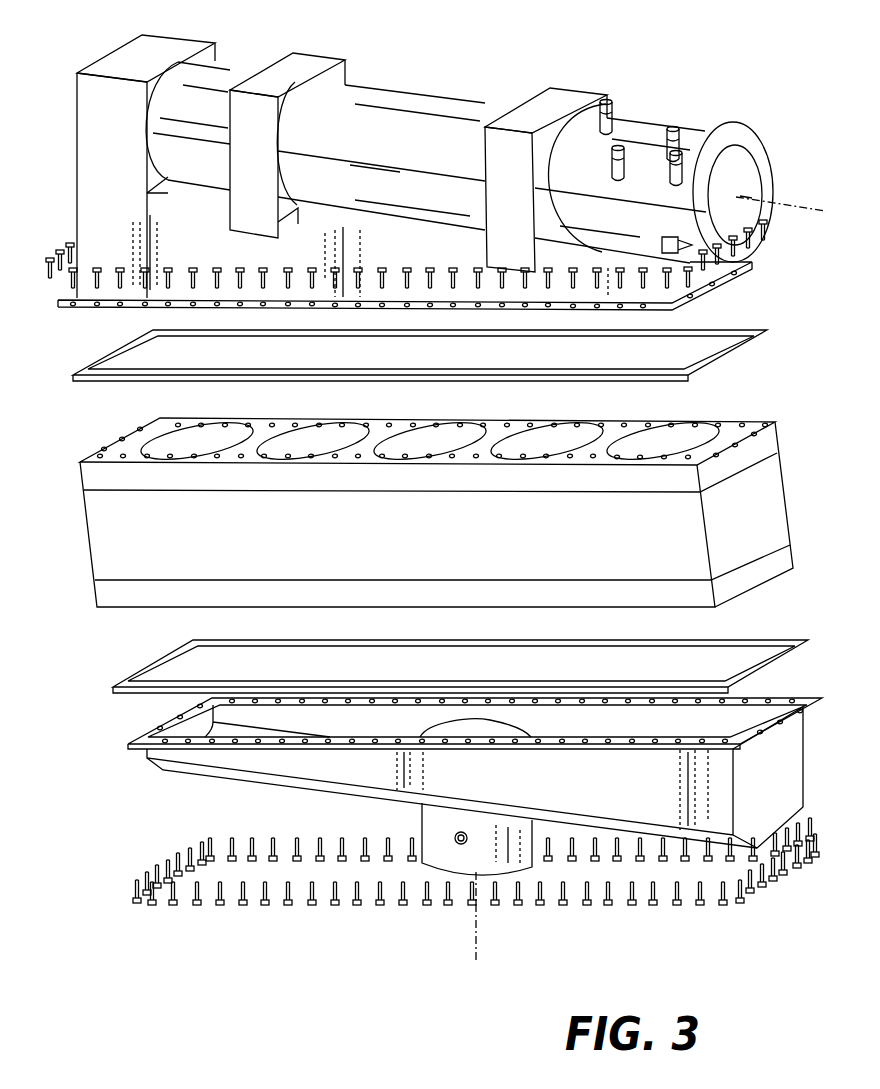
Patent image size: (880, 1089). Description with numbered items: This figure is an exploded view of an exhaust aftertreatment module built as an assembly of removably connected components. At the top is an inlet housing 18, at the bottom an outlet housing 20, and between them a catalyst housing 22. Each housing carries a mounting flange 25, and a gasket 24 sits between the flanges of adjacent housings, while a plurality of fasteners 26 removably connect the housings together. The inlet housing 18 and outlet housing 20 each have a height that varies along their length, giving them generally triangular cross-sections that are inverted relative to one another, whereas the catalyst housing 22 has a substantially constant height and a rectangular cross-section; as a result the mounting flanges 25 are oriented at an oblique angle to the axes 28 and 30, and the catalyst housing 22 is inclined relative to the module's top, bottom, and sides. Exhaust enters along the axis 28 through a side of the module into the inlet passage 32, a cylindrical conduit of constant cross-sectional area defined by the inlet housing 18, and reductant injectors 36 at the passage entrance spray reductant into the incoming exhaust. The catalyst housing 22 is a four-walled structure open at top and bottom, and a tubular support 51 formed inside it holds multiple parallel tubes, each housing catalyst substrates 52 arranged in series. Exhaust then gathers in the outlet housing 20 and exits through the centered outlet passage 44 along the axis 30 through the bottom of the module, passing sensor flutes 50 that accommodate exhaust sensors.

The inlet housing 18 is at (57, 128).
The outlet housing 20 is at (155, 783).
The catalyst housing 22 is at (66, 536).
The gasket 24 is at (765, 331).
The mounting flange 25 is at (72, 303).
The fastener 26 is at (767, 237).
The axis 28 is at (778, 204).
The axis 30 is at (480, 935).
The inlet passage 32 is at (740, 158).
The reductant injector 36 is at (672, 127).
The outlet passage 44 is at (528, 735).
The sensor flute 50 is at (454, 838).
The tubular support 51 is at (732, 428).
The catalyst substrate 52 is at (430, 440).